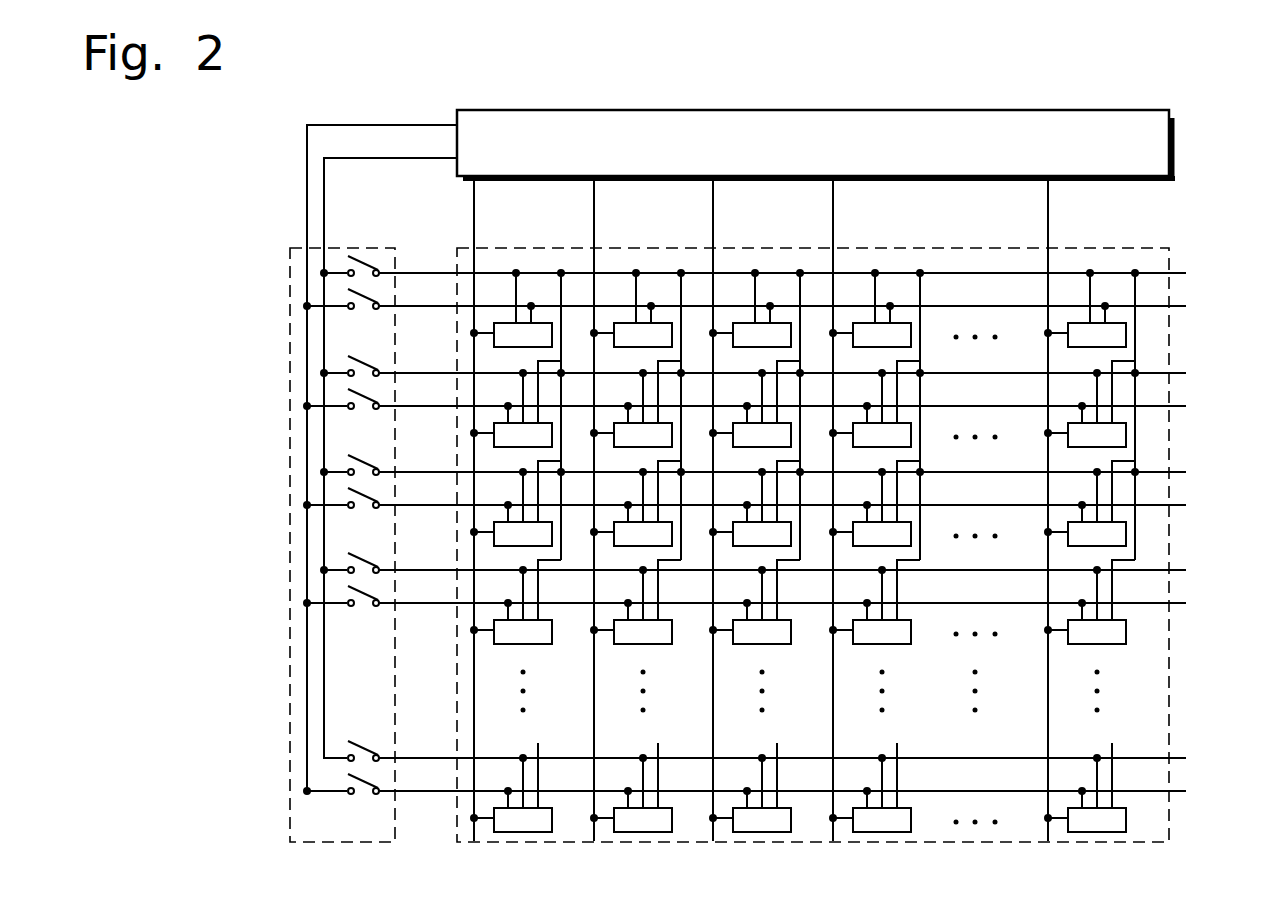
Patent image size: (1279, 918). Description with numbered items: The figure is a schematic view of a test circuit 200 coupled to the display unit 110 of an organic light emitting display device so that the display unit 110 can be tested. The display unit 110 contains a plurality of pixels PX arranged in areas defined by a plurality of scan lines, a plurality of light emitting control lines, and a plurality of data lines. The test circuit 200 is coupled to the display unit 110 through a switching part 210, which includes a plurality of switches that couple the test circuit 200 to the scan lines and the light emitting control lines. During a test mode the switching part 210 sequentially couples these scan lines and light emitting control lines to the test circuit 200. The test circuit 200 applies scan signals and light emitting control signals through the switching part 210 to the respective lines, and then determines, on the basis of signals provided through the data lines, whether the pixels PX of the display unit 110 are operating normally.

The test circuit 200 is at (1175, 145).
The switching part 210 is at (290, 478).
The display unit 110 is at (816, 509).
The pixel PX is at (1126, 532).